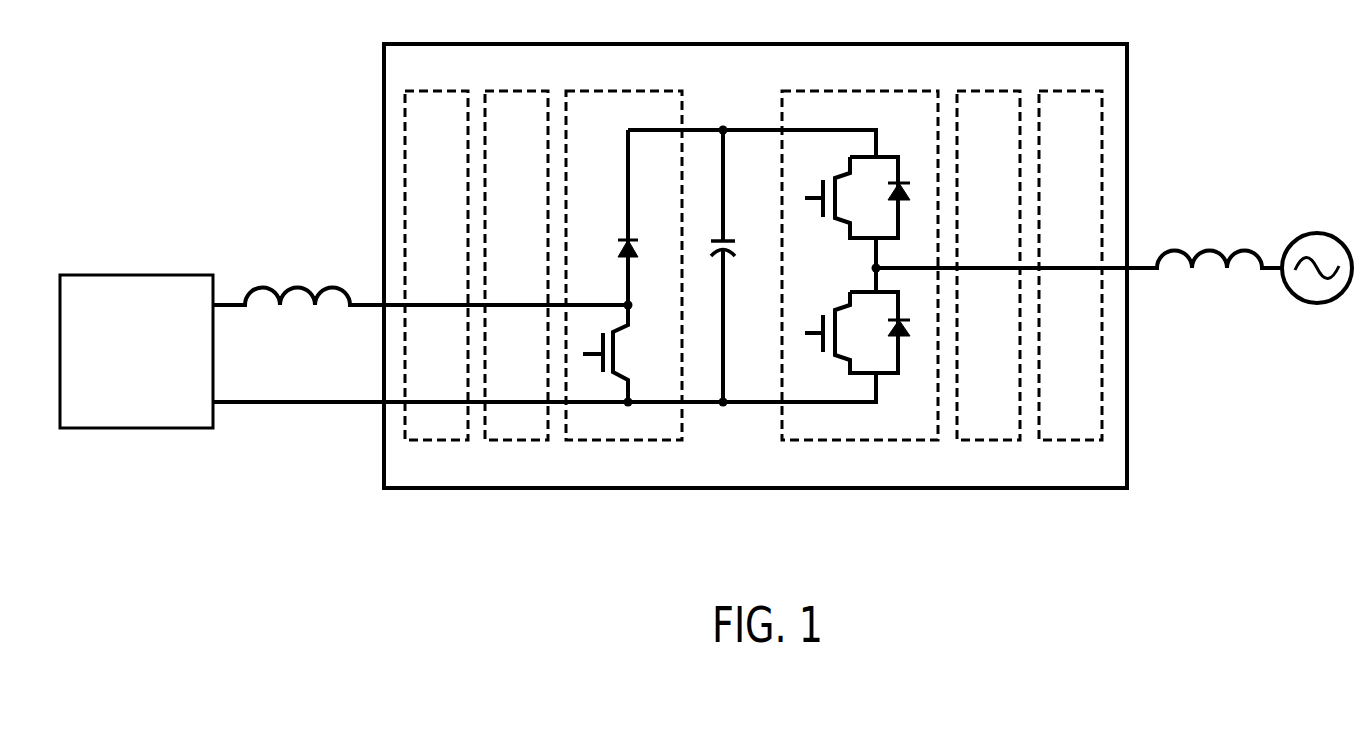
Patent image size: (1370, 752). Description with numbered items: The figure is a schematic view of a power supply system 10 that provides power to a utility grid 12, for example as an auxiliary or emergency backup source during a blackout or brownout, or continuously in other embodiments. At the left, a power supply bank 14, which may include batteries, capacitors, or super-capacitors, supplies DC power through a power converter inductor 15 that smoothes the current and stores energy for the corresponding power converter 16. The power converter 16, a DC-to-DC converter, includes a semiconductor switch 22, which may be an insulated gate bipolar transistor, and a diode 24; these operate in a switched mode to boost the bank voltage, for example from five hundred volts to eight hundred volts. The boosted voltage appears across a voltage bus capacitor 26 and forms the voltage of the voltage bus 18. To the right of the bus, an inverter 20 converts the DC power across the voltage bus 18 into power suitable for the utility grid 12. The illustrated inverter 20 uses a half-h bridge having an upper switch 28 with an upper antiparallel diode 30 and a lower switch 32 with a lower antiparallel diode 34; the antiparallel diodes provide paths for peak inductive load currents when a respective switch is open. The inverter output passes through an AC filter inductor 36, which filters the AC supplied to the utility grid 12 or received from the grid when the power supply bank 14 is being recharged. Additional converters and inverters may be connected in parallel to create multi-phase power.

The power supply system 10 is at (515, 562).
The utility grid 12 is at (1313, 305).
The power supply bank 14 is at (137, 275).
The power converter inductor 15 is at (297, 287).
The power converter 16 is at (562, 463).
The voltage bus 18 is at (726, 455).
The inverter 20 is at (949, 460).
The semiconductor switch 22 is at (622, 372).
The diode 24 is at (618, 248).
The voltage bus capacitor 26 is at (728, 241).
The upper switch 28 is at (842, 174).
The upper antiparallel diode 30 is at (903, 183).
The lower switch 32 is at (838, 355).
The lower antiparallel diode 34 is at (905, 336).
The AC filter inductor 36 is at (1207, 250).